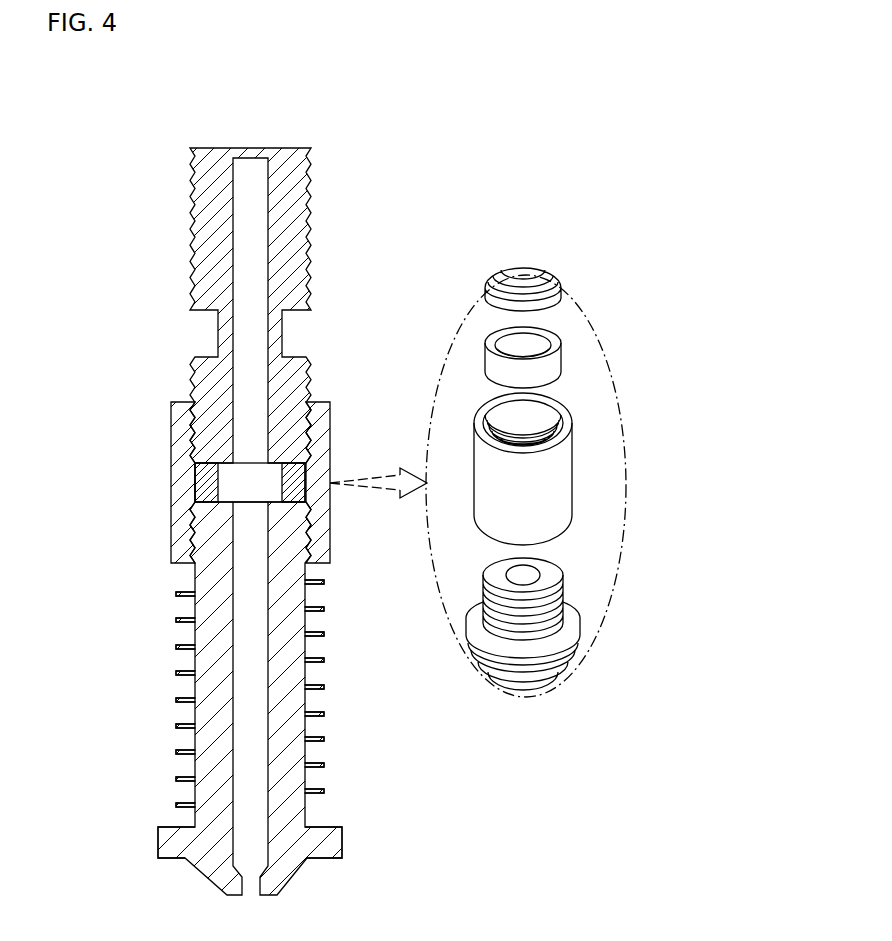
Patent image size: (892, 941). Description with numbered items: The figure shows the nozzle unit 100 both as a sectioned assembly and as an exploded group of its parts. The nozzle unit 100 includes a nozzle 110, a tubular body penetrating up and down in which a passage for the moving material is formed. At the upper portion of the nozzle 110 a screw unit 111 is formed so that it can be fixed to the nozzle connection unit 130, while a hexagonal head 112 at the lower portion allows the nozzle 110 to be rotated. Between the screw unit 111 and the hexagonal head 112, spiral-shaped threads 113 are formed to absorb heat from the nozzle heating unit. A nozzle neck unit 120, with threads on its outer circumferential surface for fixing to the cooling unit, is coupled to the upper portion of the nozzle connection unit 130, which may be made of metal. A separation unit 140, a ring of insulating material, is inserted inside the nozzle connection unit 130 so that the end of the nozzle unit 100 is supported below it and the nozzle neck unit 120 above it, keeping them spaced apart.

The nozzle unit 100 is at (274, 90).
The nozzle 110 is at (213, 743).
The screw unit 111 is at (563, 588).
The hexagonal head 112 is at (172, 842).
The threads 113 is at (178, 645).
The nozzle neck unit 120 is at (202, 250).
The nozzle connection unit 130 is at (177, 457).
The separation unit 140 is at (203, 487).